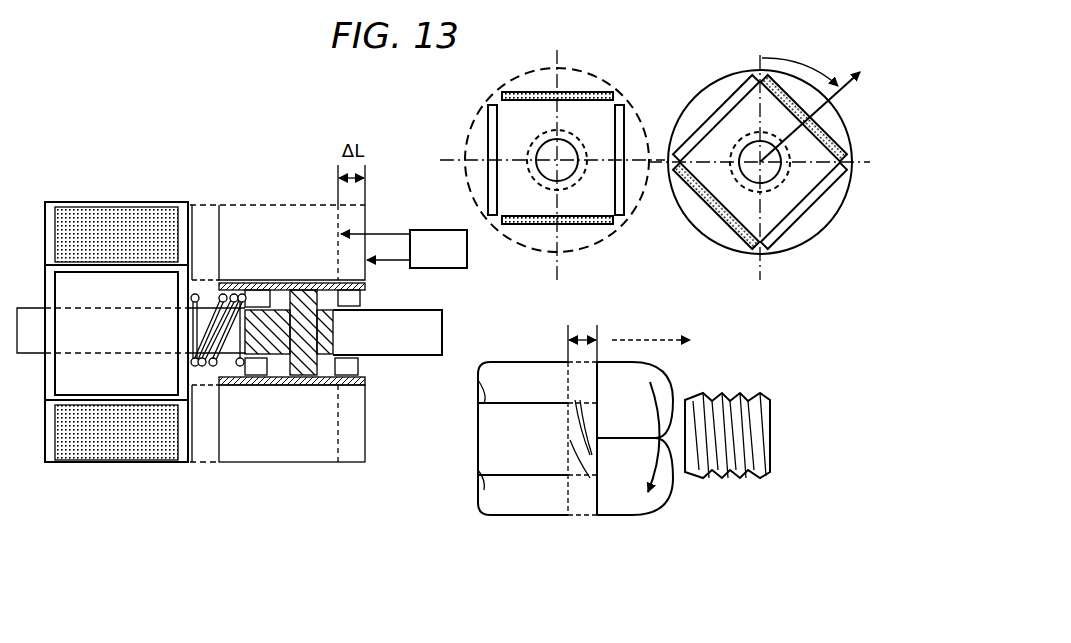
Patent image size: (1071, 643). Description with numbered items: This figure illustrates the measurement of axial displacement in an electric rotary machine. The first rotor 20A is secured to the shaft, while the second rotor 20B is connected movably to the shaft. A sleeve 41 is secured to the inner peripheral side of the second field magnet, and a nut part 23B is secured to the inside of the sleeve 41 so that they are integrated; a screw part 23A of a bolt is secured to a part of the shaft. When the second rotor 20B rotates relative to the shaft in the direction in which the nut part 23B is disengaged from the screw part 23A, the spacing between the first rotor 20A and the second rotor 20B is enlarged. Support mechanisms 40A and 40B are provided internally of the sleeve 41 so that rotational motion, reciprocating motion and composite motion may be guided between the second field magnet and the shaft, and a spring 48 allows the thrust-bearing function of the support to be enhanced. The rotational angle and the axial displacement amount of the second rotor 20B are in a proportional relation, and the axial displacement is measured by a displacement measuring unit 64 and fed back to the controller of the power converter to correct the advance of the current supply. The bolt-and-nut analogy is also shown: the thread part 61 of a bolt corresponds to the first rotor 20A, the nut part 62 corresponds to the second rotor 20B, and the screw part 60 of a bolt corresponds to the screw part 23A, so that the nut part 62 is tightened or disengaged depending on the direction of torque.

The first rotor 20A is at (188, 203).
The second rotor 20B is at (236, 205).
The sleeve 41 is at (277, 283).
The nut part 23B is at (298, 290).
The screw part of a bolt 23A is at (278, 347).
The support mechanism 40A is at (247, 365).
The support mechanism 40B is at (350, 367).
The spring 48 is at (208, 367).
The displacement measuring unit 64 is at (440, 248).
The thread part of a bolt 61 is at (488, 516).
The nut part 62 is at (575, 516).
The screw part of a bolt 60 is at (758, 472).